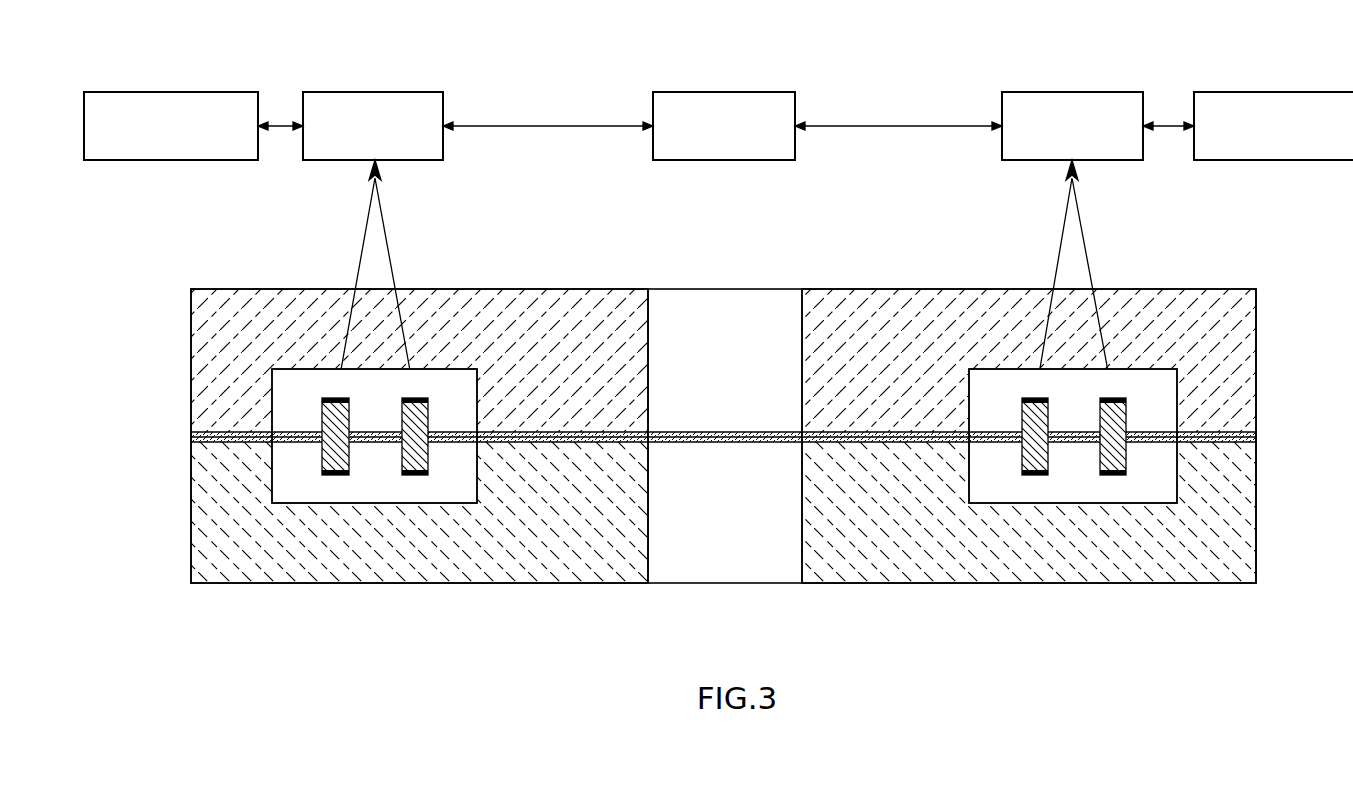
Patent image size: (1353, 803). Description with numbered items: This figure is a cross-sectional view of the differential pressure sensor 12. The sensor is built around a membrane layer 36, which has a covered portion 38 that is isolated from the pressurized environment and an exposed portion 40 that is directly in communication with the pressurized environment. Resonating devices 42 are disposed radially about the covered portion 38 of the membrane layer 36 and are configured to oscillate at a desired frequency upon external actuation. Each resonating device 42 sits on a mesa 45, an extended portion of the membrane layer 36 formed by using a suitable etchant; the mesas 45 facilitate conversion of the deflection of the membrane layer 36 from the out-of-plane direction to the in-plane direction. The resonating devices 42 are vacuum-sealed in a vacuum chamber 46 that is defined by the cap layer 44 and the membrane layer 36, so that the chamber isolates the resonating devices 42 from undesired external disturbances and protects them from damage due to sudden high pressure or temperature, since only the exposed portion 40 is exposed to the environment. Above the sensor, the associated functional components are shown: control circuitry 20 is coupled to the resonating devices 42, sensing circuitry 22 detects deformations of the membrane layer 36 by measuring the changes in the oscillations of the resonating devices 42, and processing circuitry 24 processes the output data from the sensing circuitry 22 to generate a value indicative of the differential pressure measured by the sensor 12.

The differential pressure sensor 12 is at (842, 625).
The control circuitry 20 is at (373, 92).
The sensing circuitry 22 is at (724, 92).
The processing circuitry 24 is at (171, 92).
The membrane layer 36 is at (727, 432).
The covered portion 38 is at (191, 318).
The exposed portion 40 is at (677, 289).
The resonating device 42 is at (415, 452).
The cap layer 44 is at (355, 503).
The mesa 45 is at (322, 400).
The vacuum chamber 46 is at (468, 402).